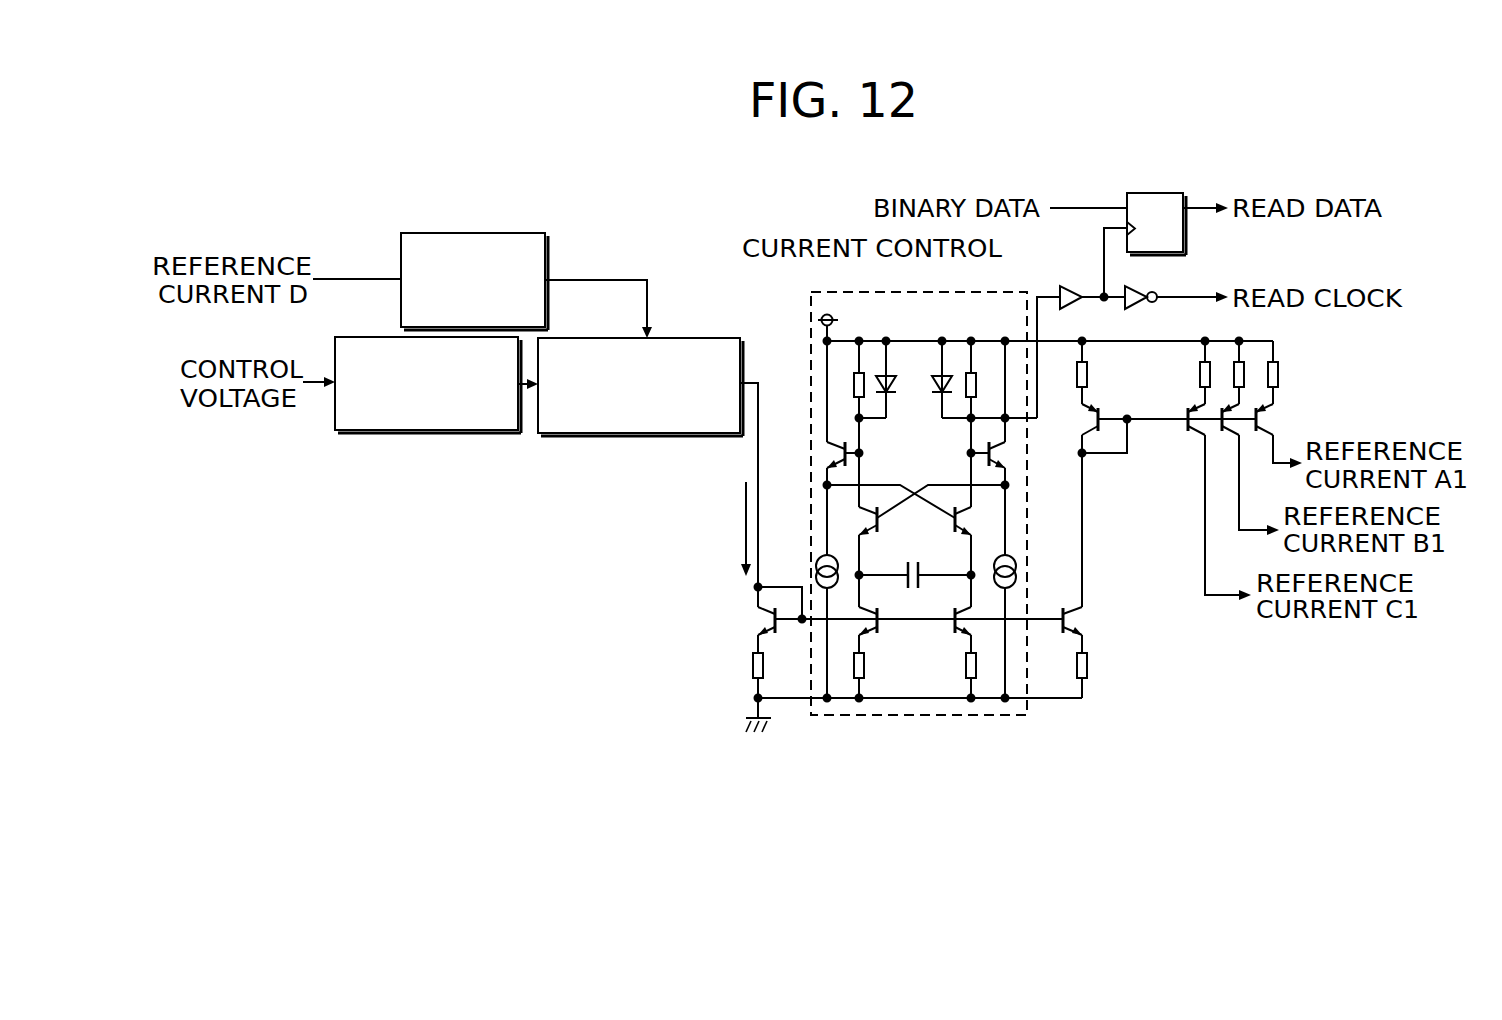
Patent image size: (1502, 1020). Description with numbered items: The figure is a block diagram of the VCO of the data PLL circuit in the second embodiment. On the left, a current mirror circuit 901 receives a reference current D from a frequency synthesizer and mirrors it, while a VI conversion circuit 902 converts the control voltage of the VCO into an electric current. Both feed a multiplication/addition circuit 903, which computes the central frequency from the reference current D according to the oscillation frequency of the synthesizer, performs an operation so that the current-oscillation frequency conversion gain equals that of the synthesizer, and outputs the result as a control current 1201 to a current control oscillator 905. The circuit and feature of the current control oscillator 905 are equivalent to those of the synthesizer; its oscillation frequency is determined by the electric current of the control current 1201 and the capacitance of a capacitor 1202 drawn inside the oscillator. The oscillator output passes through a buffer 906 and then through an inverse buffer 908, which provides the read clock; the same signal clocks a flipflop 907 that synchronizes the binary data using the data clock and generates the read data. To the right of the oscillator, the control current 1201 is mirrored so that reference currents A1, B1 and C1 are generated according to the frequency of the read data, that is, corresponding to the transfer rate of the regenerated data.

The current mirror circuit 901 is at (460, 232).
The VI conversion circuit 902 is at (400, 437).
The multiplication/addition circuit 903 is at (602, 439).
The current control oscillator 905 is at (1002, 290).
The buffer 906 is at (1070, 287).
The flipflop 907 is at (1158, 192).
The inverse buffer 908 is at (1130, 287).
The control current 1201 is at (684, 528).
The capacitor 1202 is at (918, 561).